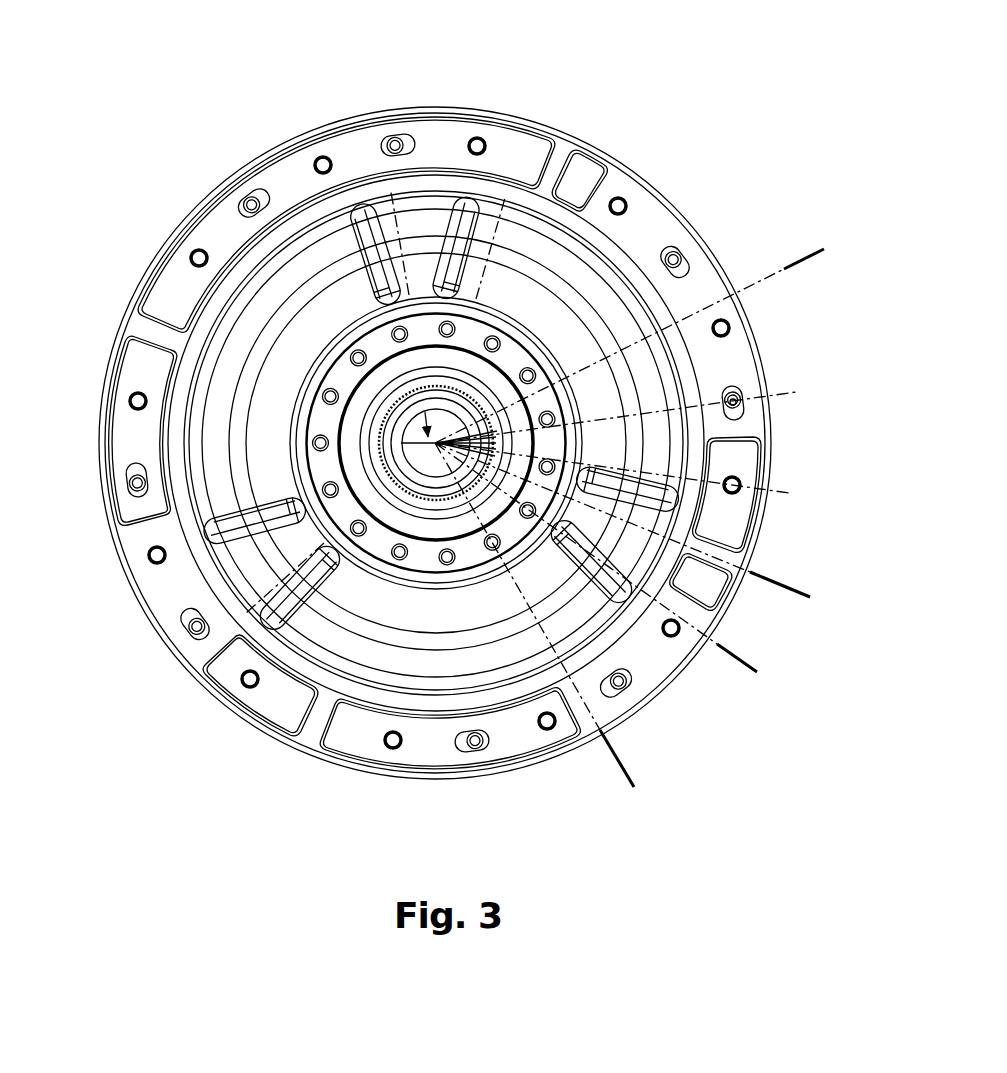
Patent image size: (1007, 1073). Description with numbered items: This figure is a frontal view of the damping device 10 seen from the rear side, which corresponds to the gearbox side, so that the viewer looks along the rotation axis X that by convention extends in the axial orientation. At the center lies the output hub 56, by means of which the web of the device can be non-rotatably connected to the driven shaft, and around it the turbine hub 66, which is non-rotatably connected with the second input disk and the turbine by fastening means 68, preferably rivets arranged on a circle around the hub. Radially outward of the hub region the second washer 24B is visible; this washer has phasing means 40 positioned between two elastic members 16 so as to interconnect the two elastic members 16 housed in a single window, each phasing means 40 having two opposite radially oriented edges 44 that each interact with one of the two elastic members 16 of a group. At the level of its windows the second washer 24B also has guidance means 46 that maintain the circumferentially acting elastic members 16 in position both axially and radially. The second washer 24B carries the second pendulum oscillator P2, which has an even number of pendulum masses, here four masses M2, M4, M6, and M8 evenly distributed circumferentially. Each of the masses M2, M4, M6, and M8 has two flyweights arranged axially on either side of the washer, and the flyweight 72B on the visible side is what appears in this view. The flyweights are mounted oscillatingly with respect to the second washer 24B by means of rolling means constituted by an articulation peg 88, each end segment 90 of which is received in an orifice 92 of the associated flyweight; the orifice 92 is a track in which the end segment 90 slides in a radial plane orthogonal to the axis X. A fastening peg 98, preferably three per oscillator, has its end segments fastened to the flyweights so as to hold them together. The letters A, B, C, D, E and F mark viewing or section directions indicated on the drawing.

The damping device 10 is at (737, 108).
The elastic members 16 is at (540, 277).
The second washer 24B is at (722, 282).
The phasing means 40 is at (412, 210).
The radially oriented edges 44 is at (337, 224).
The guidance means 46 is at (618, 198).
The output hub 56 is at (387, 414).
The turbine hub 66 is at (323, 422).
The fastening means 68 is at (454, 557).
The flyweight 72B is at (223, 230).
The articulation peg 88 is at (249, 200).
The end segment 90 is at (742, 400).
The orifice 92 is at (743, 410).
The fastening peg 98 is at (640, 174).
The pendulum mass M2 is at (650, 226).
The pendulum mass M4 is at (170, 588).
The pendulum mass M6 is at (648, 640).
The pendulum mass M8 is at (426, 158).
The second pendulum oscillator P2 is at (790, 440).
The rotation axis X is at (432, 444).
The section A is at (627, 767).
The section B is at (738, 654).
The section C is at (791, 587).
The section D is at (812, 254).
The section E is at (790, 460).
The section F is at (793, 398).